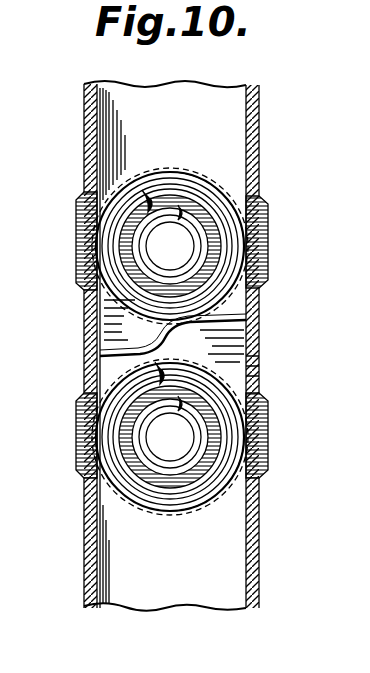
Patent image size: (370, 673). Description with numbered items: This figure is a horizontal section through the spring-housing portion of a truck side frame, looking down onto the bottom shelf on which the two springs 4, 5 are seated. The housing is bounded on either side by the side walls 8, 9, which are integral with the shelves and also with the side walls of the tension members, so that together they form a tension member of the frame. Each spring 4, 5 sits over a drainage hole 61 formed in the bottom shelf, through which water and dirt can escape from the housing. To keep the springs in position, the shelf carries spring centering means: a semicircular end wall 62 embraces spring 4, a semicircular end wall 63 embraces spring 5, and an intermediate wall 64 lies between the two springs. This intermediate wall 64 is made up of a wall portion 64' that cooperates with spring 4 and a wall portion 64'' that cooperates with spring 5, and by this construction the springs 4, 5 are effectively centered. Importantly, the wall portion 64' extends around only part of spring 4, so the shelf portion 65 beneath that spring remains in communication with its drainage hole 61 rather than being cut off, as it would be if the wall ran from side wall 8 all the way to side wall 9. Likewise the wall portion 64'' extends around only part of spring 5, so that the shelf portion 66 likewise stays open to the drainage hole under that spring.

The spring 4 is at (225, 248).
The spring 5 is at (226, 440).
The side wall 8 is at (85, 338).
The side wall 9 is at (259, 370).
The drainage hole 61 is at (170, 341).
The semicircular end wall 62 is at (240, 172).
The semicircular end wall 63 is at (228, 484).
The intermediate wall 64 is at (204, 331).
The wall portion 64' is at (252, 318).
The wall portion 64'' is at (84, 364).
The shelf portion 65 is at (120, 318).
The shelf portion 66 is at (262, 386).